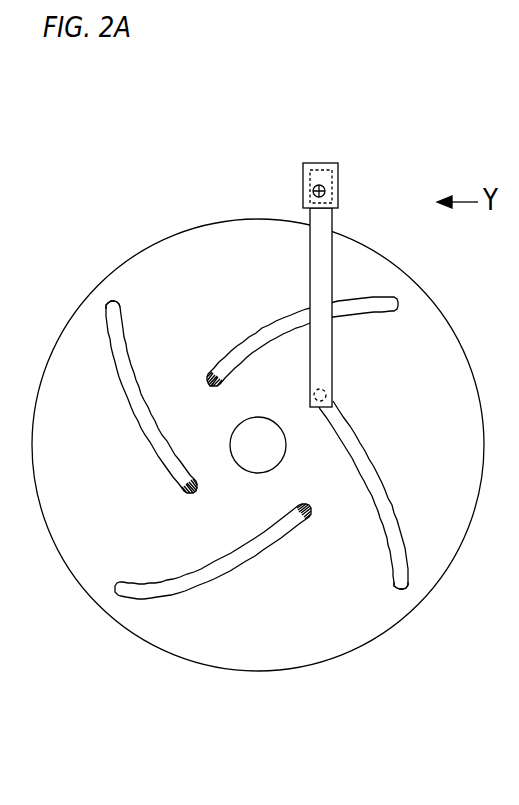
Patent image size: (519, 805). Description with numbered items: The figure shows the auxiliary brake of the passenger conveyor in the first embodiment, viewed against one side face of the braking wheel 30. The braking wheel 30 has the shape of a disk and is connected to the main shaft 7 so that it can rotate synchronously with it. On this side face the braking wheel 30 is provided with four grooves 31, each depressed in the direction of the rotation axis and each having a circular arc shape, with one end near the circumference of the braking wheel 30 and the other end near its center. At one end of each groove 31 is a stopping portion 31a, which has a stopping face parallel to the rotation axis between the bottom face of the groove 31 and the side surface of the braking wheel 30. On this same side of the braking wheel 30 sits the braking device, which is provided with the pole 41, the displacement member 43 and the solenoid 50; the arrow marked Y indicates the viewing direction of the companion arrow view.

The braking wheel 30 is at (238, 643).
The groove 31 is at (167, 586).
The stopping portion 31a is at (110, 297).
The main shaft 7 is at (230, 437).
The pole 41 is at (327, 267).
The displacement member 43 is at (310, 181).
The solenoid 50 is at (328, 168).